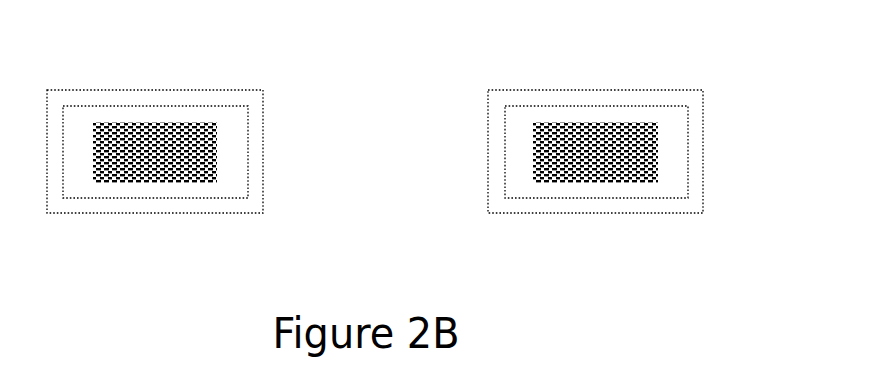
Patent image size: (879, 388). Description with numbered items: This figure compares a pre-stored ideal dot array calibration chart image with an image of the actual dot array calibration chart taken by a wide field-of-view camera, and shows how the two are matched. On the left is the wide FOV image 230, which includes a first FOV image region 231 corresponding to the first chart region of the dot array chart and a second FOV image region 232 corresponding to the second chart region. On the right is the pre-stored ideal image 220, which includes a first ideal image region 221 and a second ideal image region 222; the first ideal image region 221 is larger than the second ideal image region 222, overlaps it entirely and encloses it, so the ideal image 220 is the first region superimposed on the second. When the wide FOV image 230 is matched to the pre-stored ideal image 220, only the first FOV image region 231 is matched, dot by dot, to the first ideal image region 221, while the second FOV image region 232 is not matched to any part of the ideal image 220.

The pre-stored ideal image 220 is at (596, 90).
The first ideal image region 221 is at (542, 198).
The second ideal image region 222 is at (636, 183).
The wide FOV image 230 is at (147, 90).
The first FOV image region 231 is at (93, 198).
The second FOV image region 232 is at (188, 183).